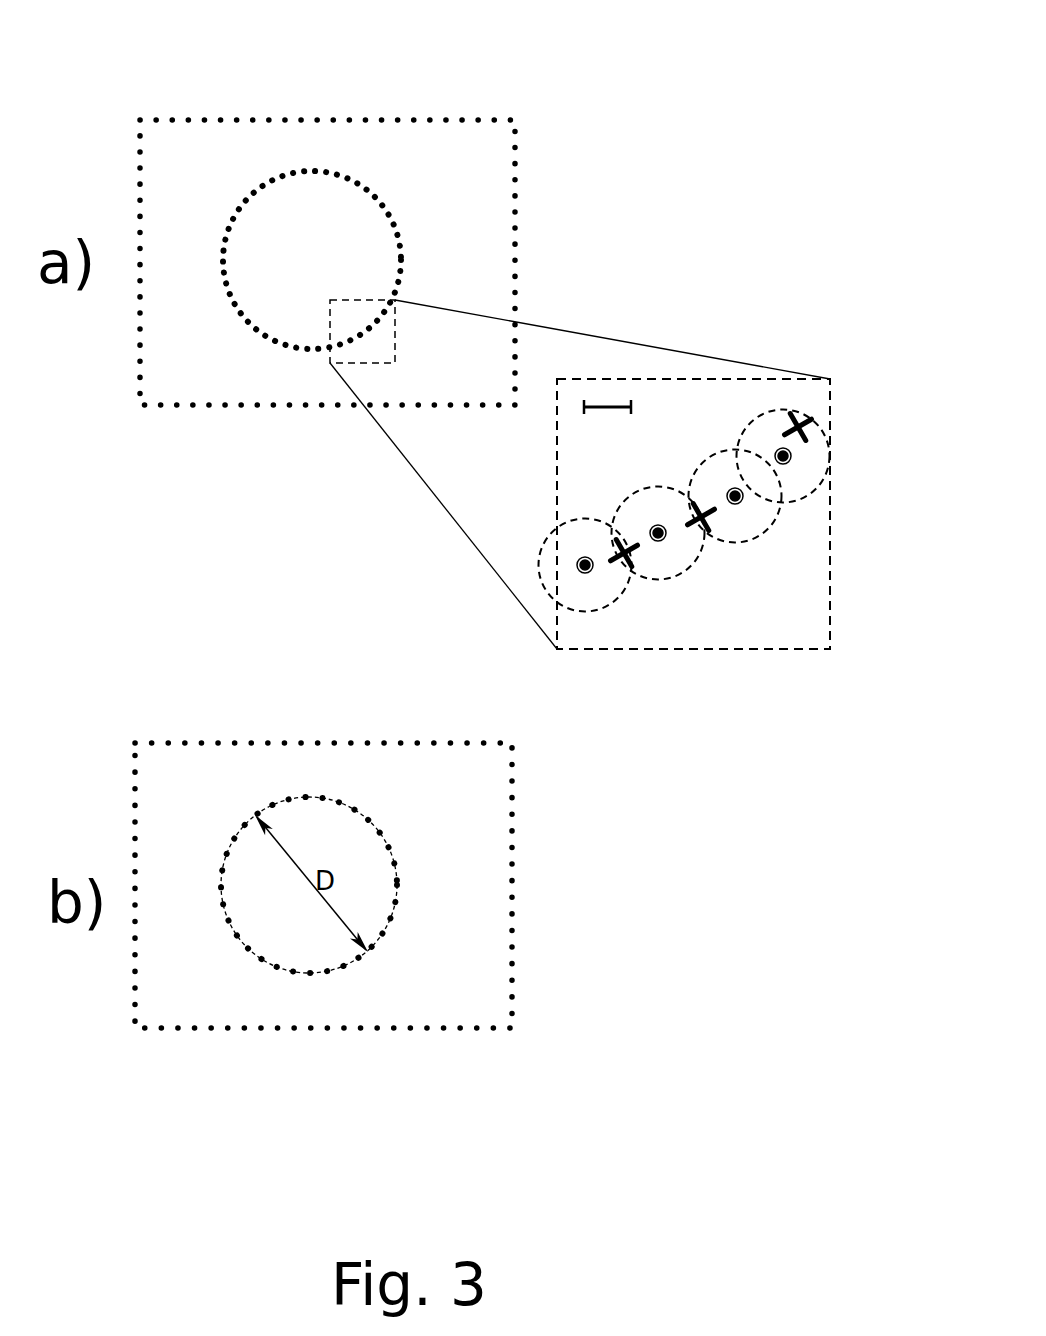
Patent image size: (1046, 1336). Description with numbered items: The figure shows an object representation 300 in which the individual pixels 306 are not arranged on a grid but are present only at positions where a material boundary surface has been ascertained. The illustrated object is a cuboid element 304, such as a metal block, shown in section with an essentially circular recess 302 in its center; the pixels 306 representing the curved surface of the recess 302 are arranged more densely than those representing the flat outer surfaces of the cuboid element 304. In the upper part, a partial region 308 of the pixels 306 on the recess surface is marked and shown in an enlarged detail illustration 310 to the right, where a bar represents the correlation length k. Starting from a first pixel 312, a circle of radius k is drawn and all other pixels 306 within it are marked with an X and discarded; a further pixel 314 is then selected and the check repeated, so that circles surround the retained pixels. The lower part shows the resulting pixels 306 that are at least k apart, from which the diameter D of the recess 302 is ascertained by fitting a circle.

The object representation 300 is at (590, 76).
The recess 302 is at (298, 240).
The cuboid element 304 is at (452, 232).
The pixels 306 is at (318, 120).
The partial region 308 is at (395, 340).
The enlarged detail illustration 310 is at (828, 407).
The first pixel 312 is at (658, 541).
The further pixel 314 is at (735, 504).